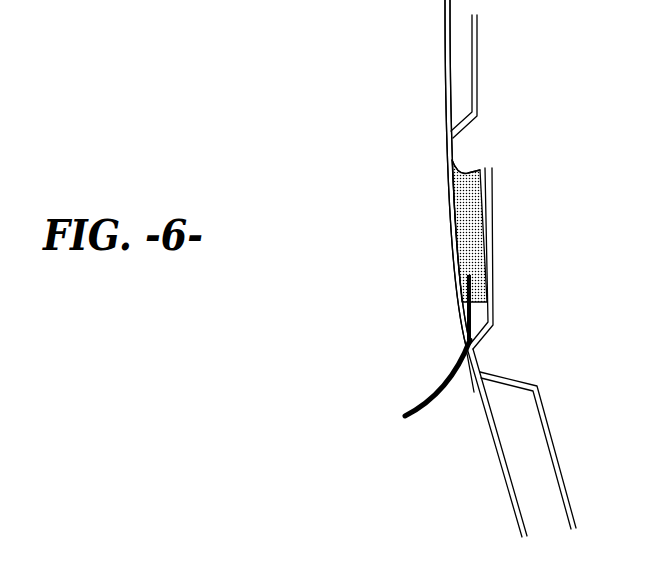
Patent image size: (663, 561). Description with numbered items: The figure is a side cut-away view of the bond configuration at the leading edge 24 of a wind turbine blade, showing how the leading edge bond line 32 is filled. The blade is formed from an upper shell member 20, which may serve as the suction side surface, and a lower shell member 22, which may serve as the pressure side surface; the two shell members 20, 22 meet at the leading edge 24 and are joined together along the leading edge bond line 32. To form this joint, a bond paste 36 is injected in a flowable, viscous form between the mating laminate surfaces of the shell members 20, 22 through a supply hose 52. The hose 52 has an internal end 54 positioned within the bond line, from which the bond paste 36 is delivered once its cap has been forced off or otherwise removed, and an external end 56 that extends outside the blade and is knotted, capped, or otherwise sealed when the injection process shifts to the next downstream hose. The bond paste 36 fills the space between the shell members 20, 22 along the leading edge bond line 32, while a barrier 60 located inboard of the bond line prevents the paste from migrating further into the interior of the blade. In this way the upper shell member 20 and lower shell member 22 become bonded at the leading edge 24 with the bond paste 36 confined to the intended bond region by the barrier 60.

The upper shell member 20 is at (450, 91).
The lower shell member 22 is at (513, 447).
The leading edge 24 is at (403, 241).
The leading edge bond line 32 is at (534, 153).
The bond paste 36 is at (475, 205).
The supply hose 52 is at (462, 303).
The internal end 54 is at (466, 275).
The external end 56 is at (406, 416).
The barrier 60 is at (455, 167).